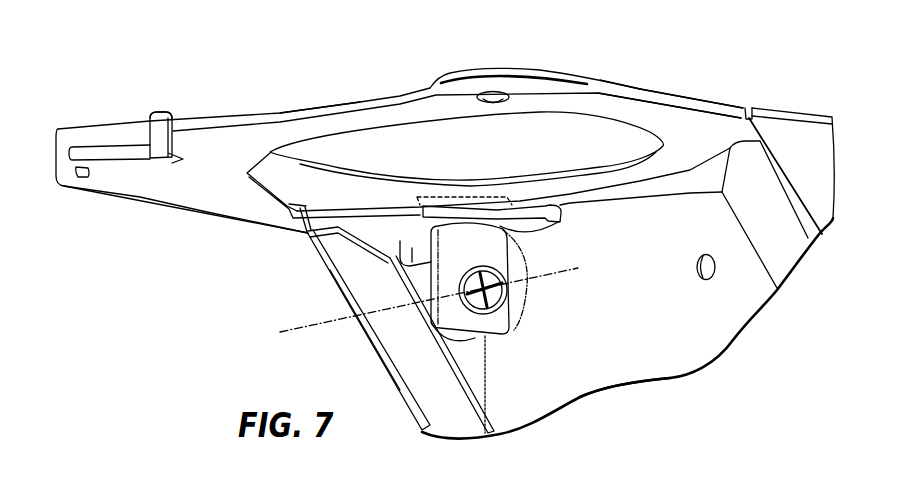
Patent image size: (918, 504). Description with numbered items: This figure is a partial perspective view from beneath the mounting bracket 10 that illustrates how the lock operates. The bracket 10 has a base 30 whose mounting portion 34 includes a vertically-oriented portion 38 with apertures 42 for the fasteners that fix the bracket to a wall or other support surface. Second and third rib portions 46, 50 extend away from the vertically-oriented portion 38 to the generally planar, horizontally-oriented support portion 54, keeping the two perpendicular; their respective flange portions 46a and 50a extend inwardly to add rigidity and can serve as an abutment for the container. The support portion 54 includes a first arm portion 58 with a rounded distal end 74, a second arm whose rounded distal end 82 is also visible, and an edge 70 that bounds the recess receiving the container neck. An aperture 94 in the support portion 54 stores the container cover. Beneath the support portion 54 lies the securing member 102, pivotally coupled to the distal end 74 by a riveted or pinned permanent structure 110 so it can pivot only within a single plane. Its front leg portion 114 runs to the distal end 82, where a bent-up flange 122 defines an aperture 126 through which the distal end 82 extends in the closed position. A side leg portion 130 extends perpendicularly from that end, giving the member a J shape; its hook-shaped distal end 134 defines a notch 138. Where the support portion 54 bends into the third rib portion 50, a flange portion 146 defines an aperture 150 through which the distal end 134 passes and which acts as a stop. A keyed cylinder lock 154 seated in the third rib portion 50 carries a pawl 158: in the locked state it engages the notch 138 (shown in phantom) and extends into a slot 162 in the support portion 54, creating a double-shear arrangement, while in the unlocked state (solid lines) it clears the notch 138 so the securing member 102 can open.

The mounting bracket 10 is at (93, 77).
The base 30 is at (778, 108).
The mounting portion 34 is at (713, 340).
The vertically-oriented portion 38 is at (650, 360).
The apertures 42 is at (716, 272).
The second rib portion 46 is at (800, 143).
The flange portion 46a is at (788, 238).
The third rib portion 50 is at (472, 373).
The flange portion 50a is at (435, 400).
The support portion 54 is at (672, 99).
The first arm portion 58 is at (632, 86).
The edge 70 is at (534, 177).
The distal end 74 is at (487, 69).
The distal end 82 is at (107, 152).
The aperture 94 is at (660, 180).
The securing member 102 is at (272, 118).
The fixed and permanent structure 110 is at (496, 104).
The front leg portion 114 is at (363, 105).
The flange 122 is at (155, 115).
The aperture 126 is at (147, 140).
The side leg portion 130 is at (202, 200).
The distal end 134 is at (530, 213).
The notch 138 is at (512, 222).
The flange portion 146 is at (306, 232).
The aperture 150 is at (340, 205).
The lock 154 is at (522, 340).
The pawl 158 is at (353, 316).
The slot 162 is at (338, 230).